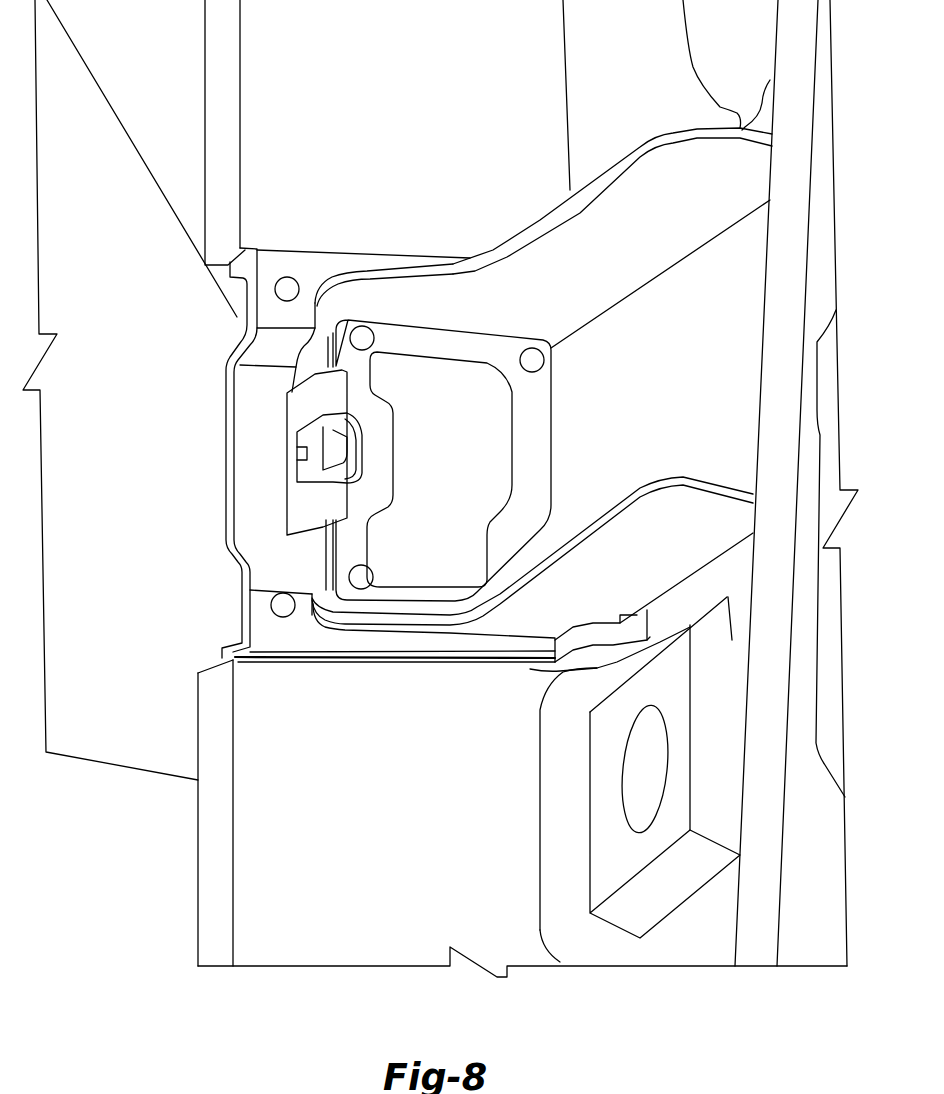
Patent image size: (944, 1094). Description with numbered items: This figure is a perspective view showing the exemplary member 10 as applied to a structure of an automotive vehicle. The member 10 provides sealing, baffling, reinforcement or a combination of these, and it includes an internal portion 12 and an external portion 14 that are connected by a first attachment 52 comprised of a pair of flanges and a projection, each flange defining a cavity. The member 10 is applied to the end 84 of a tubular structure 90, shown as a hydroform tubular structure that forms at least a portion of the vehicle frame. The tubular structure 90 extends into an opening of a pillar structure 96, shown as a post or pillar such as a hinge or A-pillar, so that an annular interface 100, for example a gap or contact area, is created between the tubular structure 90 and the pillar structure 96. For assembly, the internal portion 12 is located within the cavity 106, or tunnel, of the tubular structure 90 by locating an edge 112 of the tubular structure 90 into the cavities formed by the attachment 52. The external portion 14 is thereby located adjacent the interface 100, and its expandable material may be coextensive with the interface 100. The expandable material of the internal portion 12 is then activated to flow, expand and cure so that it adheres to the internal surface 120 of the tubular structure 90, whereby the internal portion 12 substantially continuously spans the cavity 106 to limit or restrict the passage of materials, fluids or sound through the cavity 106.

The member 10 is at (287, 240).
The internal portion 12 is at (461, 446).
The external portion 14 is at (483, 651).
The first attachment 52 is at (264, 444).
The end 84 is at (521, 250).
The tubular structure 90 is at (117, 147).
The pillar structure 96 is at (402, 816).
The annular interface 100 is at (303, 675).
The cavity 106 is at (407, 244).
The edge 112 is at (312, 547).
The internal surface 120 is at (377, 285).